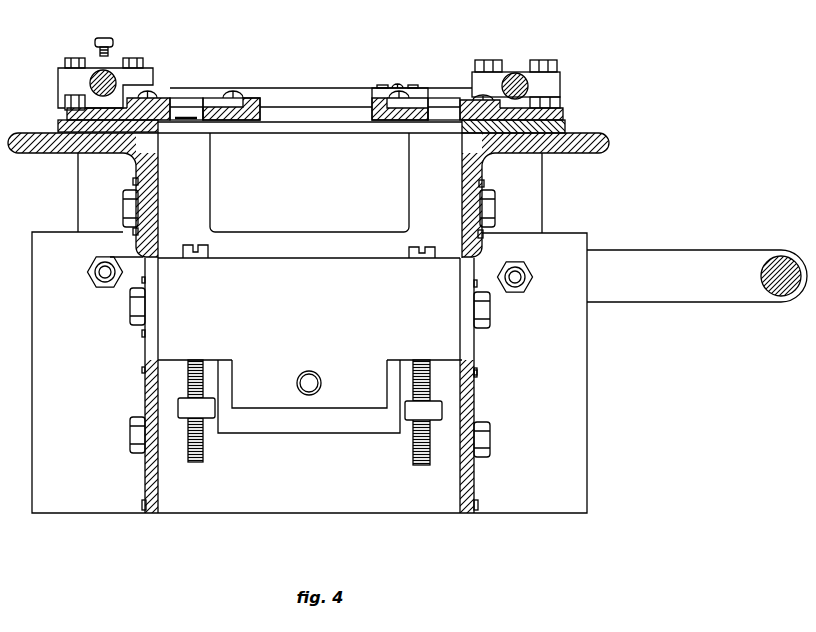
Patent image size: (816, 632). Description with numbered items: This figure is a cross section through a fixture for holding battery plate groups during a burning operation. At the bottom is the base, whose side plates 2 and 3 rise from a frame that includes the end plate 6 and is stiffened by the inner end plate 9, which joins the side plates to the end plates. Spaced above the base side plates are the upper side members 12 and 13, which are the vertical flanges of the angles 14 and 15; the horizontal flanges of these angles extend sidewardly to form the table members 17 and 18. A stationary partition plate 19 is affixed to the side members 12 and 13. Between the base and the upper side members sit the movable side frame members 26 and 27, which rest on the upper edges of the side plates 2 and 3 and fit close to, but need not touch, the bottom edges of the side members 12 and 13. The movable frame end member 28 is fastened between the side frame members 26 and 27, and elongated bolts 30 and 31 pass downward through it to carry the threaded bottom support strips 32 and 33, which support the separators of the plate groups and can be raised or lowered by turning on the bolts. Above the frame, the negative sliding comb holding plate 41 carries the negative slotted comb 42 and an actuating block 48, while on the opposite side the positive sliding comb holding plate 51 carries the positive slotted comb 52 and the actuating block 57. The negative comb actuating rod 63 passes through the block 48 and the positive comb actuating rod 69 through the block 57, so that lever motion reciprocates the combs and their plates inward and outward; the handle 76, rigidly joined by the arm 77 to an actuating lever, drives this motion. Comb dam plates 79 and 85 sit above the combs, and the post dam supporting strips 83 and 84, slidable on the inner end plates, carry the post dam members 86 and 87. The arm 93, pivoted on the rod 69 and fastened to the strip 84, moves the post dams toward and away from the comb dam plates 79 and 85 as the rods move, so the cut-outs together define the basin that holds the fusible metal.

The side plate 2 is at (469, 400).
The side plate 3 is at (148, 400).
The end plate 6 is at (574, 382).
The inner end plate 9 is at (329, 472).
The side member 12 is at (478, 177).
The side member 13 is at (143, 173).
The angle 14 is at (519, 157).
The angle 15 is at (67, 155).
The table member 17 is at (606, 147).
The table member 18 is at (47, 143).
The stationary partition plate 19 is at (419, 207).
The movable side frame member 26 is at (469, 333).
The movable side frame member 27 is at (150, 337).
The movable frame end member 28 is at (324, 268).
The elongated bolt 30 is at (420, 465).
The elongated bolt 31 is at (203, 462).
The bottom support strip 32 is at (409, 420).
The bottom support strip 33 is at (205, 417).
The negative sliding comb holding plate 41 is at (564, 130).
The negative slotted comb 42 is at (562, 118).
The actuating block 48 is at (550, 83).
The positive sliding comb holding plate 51 is at (60, 123).
The positive slotted comb 52 is at (72, 113).
The actuating block 57 is at (143, 75).
The negative comb actuating rod 63 is at (515, 73).
The positive comb actuating rod 69 is at (98, 73).
The handle 76 is at (774, 288).
The arm 77 is at (707, 288).
The comb dam plate 79 is at (467, 102).
The post dam supporting strip 83 is at (233, 115).
The post dam supporting strip 84 is at (382, 115).
The comb dam plate 85 is at (165, 100).
The post dam member 86 is at (373, 100).
The post dam member 87 is at (248, 99).
The arm 93 is at (302, 97).